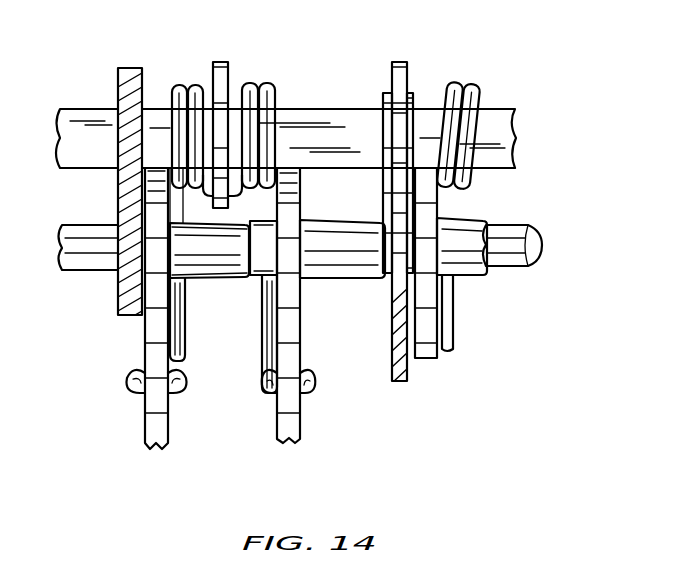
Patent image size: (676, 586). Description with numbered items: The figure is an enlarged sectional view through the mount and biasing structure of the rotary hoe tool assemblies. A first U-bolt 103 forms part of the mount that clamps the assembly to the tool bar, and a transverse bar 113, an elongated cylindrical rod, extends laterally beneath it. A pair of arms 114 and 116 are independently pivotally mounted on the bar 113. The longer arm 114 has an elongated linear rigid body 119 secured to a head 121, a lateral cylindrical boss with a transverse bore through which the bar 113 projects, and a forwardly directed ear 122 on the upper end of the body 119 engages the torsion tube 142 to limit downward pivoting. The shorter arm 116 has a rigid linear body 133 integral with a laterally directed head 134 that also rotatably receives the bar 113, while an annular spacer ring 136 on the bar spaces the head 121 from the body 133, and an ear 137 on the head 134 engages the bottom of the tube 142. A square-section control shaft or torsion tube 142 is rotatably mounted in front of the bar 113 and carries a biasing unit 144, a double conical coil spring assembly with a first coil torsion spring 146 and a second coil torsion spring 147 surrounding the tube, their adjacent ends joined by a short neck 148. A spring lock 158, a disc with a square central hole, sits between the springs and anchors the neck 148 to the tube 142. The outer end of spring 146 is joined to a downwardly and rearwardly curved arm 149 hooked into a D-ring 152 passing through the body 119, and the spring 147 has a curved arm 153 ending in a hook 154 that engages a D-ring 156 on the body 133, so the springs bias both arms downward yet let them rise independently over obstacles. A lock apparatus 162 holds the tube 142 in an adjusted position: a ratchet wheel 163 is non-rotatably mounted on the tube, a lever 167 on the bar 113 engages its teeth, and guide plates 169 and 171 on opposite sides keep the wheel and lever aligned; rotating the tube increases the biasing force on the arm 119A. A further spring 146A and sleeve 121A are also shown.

The first U-bolt 103 is at (130, 68).
The transverse bar 113 is at (513, 247).
The arm 114 is at (137, 417).
The second arm 116 is at (303, 428).
The body 119 is at (155, 412).
The arm 119A is at (425, 305).
The head 121 is at (205, 260).
The sleeve 121A is at (468, 252).
The ear 122 is at (155, 192).
The body 133 is at (285, 405).
The head 134 is at (330, 250).
The spacer ring 136 is at (252, 270).
The ear 137 is at (287, 192).
The torsion tube 142 is at (513, 132).
The biasing unit 144 is at (253, 62).
The first coil torsion spring 146 is at (186, 82).
The spring coil 146A is at (455, 80).
The second coil torsion spring 147 is at (260, 82).
The neck 148 is at (209, 250).
The first curved arm 149 is at (180, 330).
The D-ring 152 is at (137, 372).
The second curved arm 153 is at (267, 315).
The hook 154 is at (272, 367).
The D-ring 156 is at (262, 385).
The spring lock 158 is at (220, 58).
The lock apparatus 162 is at (402, 387).
The ratchet wheel 163 is at (399, 58).
The lever 167 is at (402, 363).
The guide plate 169 is at (387, 90).
The guide plate 171 is at (412, 90).